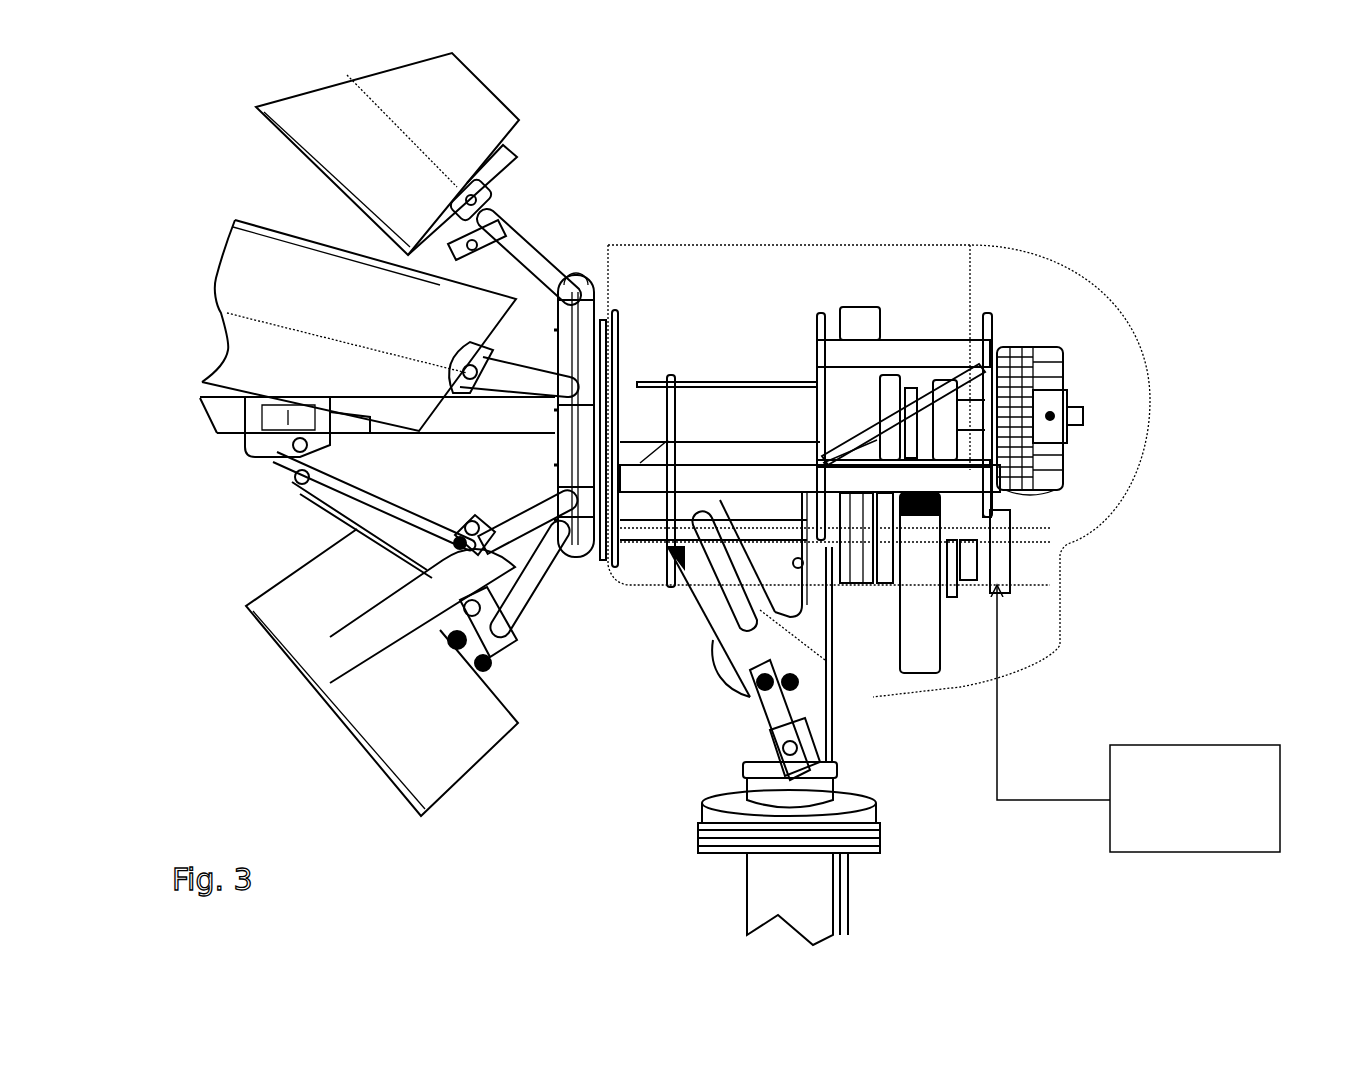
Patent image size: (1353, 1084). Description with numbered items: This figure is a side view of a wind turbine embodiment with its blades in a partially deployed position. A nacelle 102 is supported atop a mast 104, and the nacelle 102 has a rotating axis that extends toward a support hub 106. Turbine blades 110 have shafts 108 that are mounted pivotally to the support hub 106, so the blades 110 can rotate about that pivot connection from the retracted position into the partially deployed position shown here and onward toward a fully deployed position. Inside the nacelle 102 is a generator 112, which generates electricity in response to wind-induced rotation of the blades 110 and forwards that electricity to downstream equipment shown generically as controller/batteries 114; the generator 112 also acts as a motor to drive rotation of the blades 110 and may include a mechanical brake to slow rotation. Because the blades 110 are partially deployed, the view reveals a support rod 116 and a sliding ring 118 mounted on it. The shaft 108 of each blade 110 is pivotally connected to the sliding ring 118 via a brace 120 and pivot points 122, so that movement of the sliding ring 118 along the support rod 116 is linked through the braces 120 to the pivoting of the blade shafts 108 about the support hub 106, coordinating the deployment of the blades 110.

The nacelle 102 is at (832, 265).
The mast 104 is at (862, 890).
The support hub 106 is at (580, 255).
The shaft 108 is at (567, 617).
The turbine blade 110 is at (295, 625).
The generator 112 is at (1040, 330).
The controller/batteries 114 is at (1215, 720).
The support rod 116 is at (195, 415).
The sliding ring 118 is at (250, 460).
The brace 120 is at (315, 505).
The pivot point 122 is at (335, 447).